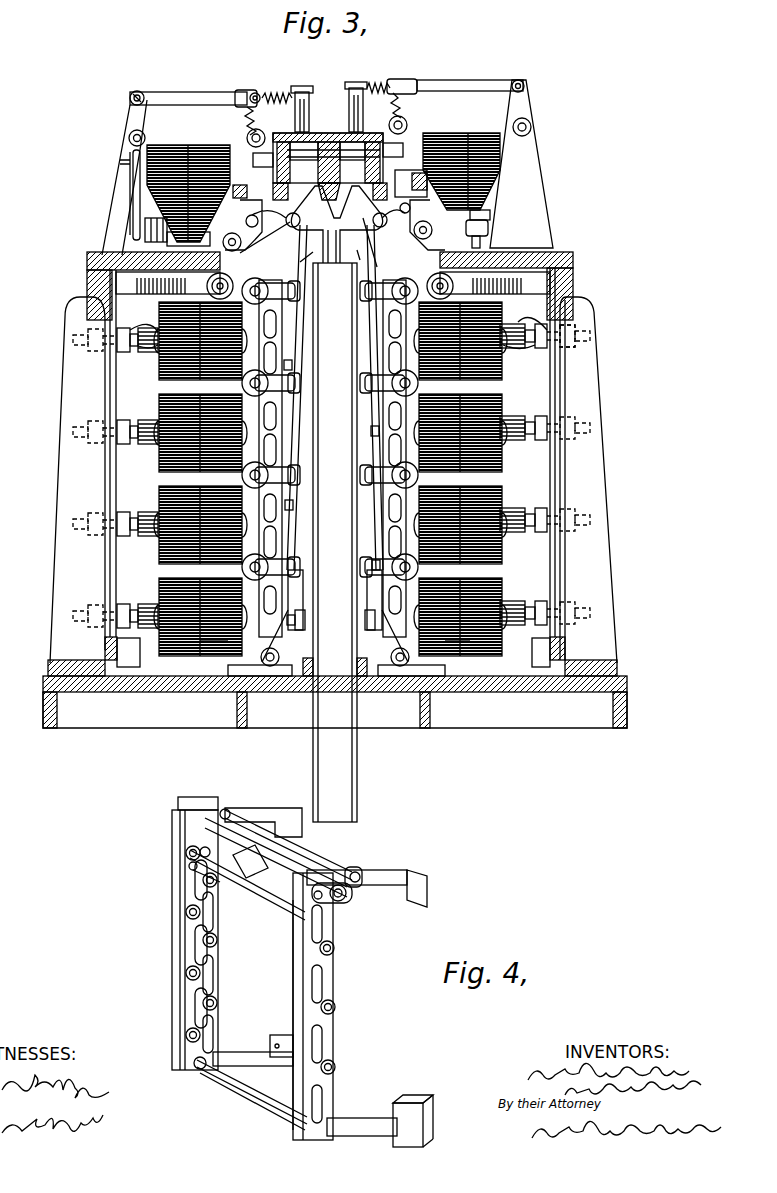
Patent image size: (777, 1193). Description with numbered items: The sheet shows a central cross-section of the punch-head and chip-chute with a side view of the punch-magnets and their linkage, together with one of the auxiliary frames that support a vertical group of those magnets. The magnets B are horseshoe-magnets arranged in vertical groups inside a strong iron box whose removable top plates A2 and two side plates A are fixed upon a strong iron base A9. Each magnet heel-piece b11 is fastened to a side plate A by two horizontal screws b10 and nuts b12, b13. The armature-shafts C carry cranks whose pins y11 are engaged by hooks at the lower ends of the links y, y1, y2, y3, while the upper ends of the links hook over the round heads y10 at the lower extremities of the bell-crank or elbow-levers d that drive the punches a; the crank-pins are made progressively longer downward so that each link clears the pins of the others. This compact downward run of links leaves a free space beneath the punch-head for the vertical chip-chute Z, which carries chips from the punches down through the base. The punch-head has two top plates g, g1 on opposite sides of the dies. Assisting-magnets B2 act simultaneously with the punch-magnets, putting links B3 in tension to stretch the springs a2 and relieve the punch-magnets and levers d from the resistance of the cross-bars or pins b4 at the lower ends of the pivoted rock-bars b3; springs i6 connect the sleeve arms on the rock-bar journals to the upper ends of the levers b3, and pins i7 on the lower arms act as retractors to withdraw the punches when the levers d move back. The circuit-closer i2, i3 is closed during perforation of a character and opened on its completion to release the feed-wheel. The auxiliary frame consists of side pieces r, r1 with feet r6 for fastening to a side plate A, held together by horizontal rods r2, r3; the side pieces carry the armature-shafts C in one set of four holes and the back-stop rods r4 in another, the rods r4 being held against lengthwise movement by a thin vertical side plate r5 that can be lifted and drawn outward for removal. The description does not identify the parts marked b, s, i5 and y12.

In FIG. 3, the side plates A is at (72, 448).
In FIG. 3, the top plates A2 is at (87, 262).
In FIG. 3, the iron base A9 is at (552, 694).
In FIG. 3, the punch-magnets B is at (160, 372).
In FIG. 3, the assisting-magnets B2 is at (323, 187).
In FIG. 3, the links B3 is at (200, 92).
In FIG. 3, the armature-shafts C is at (259, 476).
In FIG. 4, the armature-shafts C is at (300, 872).
In FIG. 3, the chip-chute Z is at (356, 790).
In FIG. 3, the punches a is at (328, 166).
In FIG. 3, the springs a2 is at (278, 92).
In FIG. 3, the top plate g is at (302, 110).
In FIG. 3, the top plate g1 is at (349, 112).
In FIG. 4, the roller shaft b is at (225, 880).
In FIG. 3, the rock-bars b3 is at (240, 103).
In FIG. 3, the cross-bars b4 is at (412, 165).
In FIG. 3, the horizontal screws b10 is at (117, 343).
In FIG. 3, the heel-pieces b11 is at (130, 330).
In FIG. 3, the nuts b12 is at (138, 346).
In FIG. 3, the nuts b13 is at (590, 338).
In FIG. 3, the circuit-closer i2 is at (133, 188).
In FIG. 3, the circuit-closer i3 is at (130, 208).
In FIG. 3, the pivot pin i5 is at (255, 92).
In FIG. 3, the springs i6 is at (247, 118).
In FIG. 3, the pins i7 is at (253, 160).
In FIG. 3, the rocking arm s is at (246, 219).
In FIG. 3, the bell-crank levers d is at (330, 245).
In FIG. 3, the link y is at (303, 290).
In FIG. 3, the link y1 is at (292, 362).
In FIG. 3, the link y2 is at (371, 432).
In FIG. 3, the link y3 is at (293, 506).
In FIG. 3, the round heads y10 is at (292, 228).
In FIG. 3, the crank-pins y11 is at (372, 566).
In FIG. 3, the rod clevis y12 is at (298, 590).
In FIG. 3, the side piece r is at (213, 650).
In FIG. 4, the side piece r is at (238, 800).
In FIG. 3, the side piece r1 is at (488, 650).
In FIG. 4, the side piece r1 is at (398, 870).
In FIG. 4, the horizontal rod r2 is at (230, 1080).
In FIG. 4, the horizontal rod r3 is at (248, 828).
In FIG. 4, the back-stop rods r4 is at (258, 890).
In FIG. 4, the vertical side plate r5 is at (300, 990).
In FIG. 3, the feet r6 is at (116, 290).
In FIG. 4, the feet r6 is at (290, 808).